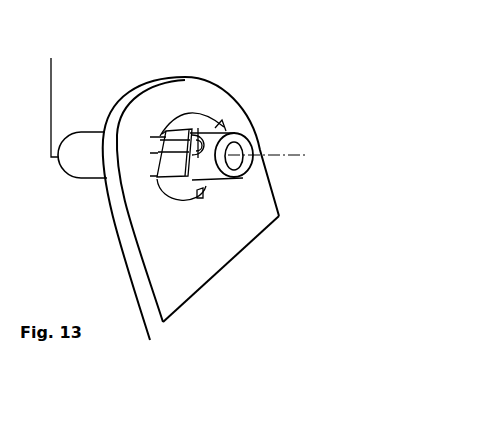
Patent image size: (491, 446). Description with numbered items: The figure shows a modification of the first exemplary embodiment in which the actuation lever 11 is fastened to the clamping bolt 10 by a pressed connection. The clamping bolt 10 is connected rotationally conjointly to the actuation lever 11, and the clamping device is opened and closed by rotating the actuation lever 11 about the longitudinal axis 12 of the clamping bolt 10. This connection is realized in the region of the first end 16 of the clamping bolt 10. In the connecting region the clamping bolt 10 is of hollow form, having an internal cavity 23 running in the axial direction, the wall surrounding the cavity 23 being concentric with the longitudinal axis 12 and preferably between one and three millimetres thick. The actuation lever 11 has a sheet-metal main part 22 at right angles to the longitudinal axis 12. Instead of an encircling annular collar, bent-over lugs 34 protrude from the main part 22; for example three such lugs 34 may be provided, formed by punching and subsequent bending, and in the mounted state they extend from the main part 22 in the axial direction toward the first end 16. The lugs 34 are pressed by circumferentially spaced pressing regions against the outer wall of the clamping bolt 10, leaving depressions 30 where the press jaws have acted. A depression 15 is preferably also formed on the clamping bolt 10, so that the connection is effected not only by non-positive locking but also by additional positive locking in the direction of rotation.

The clamping bolt 10 is at (80, 138).
The actuation lever 11 is at (256, 251).
The longitudinal axis 12 is at (48, 95).
The depression 15 is at (198, 133).
The first end 16 is at (240, 151).
The main part 22 is at (175, 268).
The internal cavity 23 is at (229, 147).
The depressions 30 is at (173, 150).
The bent-over lugs 34 is at (167, 125).